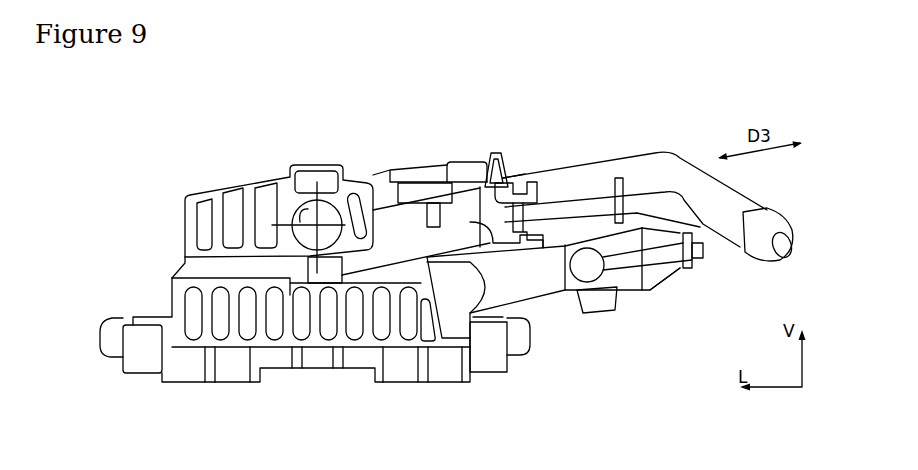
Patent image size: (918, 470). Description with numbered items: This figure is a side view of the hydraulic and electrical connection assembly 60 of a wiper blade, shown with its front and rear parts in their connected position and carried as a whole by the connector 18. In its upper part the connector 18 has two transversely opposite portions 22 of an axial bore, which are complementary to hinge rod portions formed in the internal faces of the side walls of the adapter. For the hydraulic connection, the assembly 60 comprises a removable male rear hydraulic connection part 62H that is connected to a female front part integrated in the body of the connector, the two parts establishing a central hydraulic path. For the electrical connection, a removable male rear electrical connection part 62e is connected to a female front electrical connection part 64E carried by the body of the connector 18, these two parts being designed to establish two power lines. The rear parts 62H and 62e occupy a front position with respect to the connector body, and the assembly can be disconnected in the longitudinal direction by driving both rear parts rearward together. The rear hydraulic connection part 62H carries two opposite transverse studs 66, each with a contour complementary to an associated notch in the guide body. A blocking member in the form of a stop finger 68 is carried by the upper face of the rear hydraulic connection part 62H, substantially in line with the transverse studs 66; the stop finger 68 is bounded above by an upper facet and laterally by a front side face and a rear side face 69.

The connector 18 is at (195, 381).
The transversely opposite portions of an axial bore 22 is at (303, 219).
The assembly of means for hydraulic and electrical connection 60 is at (584, 243).
The rear hydraulic connection part 62H is at (600, 165).
The rear electrical connection part 62e is at (667, 272).
The front electrical connection part 64E is at (543, 290).
The transverse studs 66 is at (548, 178).
The stop finger 68 is at (509, 163).
The rear side face 69 is at (506, 176).